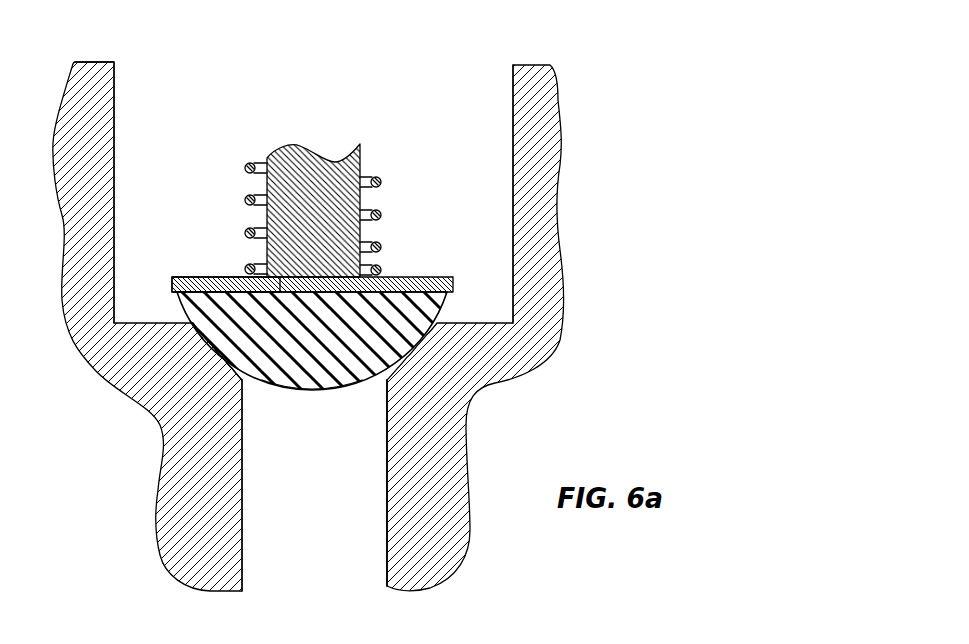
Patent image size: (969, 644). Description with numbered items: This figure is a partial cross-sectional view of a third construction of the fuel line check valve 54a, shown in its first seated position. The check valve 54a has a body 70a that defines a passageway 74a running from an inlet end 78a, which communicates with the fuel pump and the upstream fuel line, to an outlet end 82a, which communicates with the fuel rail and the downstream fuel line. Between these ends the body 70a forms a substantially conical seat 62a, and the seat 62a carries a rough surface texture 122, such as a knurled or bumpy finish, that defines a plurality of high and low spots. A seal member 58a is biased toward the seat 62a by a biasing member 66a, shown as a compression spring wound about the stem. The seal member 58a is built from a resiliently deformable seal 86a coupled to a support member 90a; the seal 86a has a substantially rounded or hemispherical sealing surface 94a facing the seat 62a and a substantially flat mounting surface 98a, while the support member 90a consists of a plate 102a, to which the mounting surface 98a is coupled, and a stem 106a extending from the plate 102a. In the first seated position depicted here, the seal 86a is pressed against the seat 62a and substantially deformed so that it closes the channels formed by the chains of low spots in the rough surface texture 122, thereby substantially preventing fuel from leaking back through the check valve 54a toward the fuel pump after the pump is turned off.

The check valve 54a is at (349, 315).
The seal member 58a is at (324, 199).
The conical seat 62a is at (366, 385).
The biasing member 66a is at (247, 166).
The body 70a is at (540, 265).
The passageway 74a is at (513, 203).
The inlet end 78a is at (386, 552).
The outlet end 82a is at (114, 110).
The seal 86a is at (290, 385).
The support member 90a is at (360, 230).
The sealing surface 94a is at (295, 370).
The mounting surface 98a is at (400, 285).
The plate 102a is at (205, 277).
The stem 106a is at (359, 168).
The rough surface texture 122 is at (243, 378).